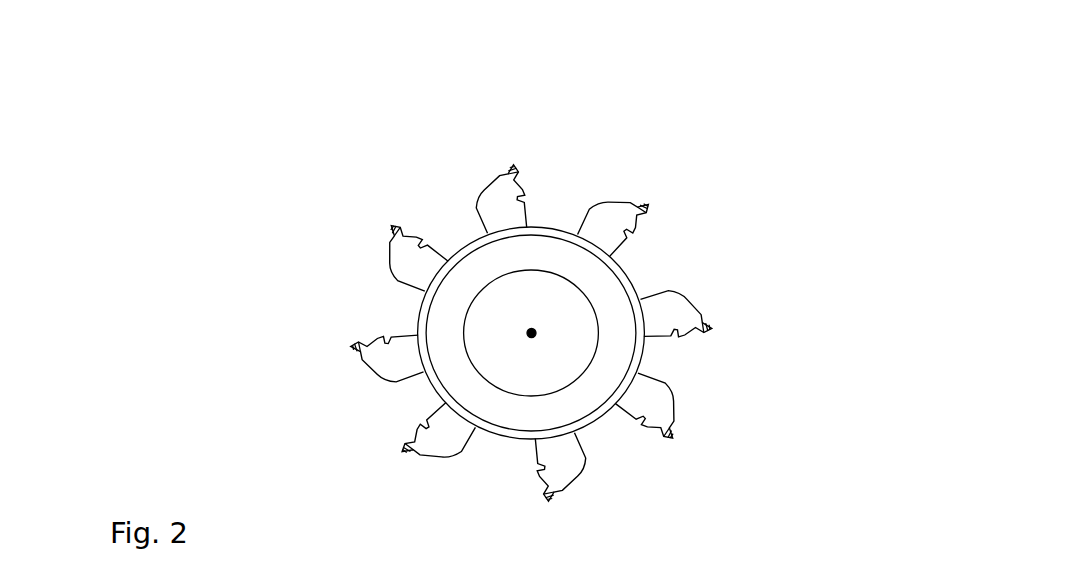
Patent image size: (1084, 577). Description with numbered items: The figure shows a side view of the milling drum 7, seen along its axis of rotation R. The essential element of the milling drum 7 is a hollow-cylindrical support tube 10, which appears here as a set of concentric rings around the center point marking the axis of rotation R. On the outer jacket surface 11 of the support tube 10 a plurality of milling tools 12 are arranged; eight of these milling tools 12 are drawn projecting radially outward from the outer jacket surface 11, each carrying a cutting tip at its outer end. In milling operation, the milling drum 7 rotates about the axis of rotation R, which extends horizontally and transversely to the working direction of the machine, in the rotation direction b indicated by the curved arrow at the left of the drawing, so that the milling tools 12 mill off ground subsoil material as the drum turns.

The milling drum 7 is at (604, 166).
The support tube 10 is at (508, 435).
The outer jacket surface 11 is at (630, 275).
The milling tools 12 is at (495, 208).
The axis of rotation R is at (532, 333).
The rotation direction b is at (395, 492).